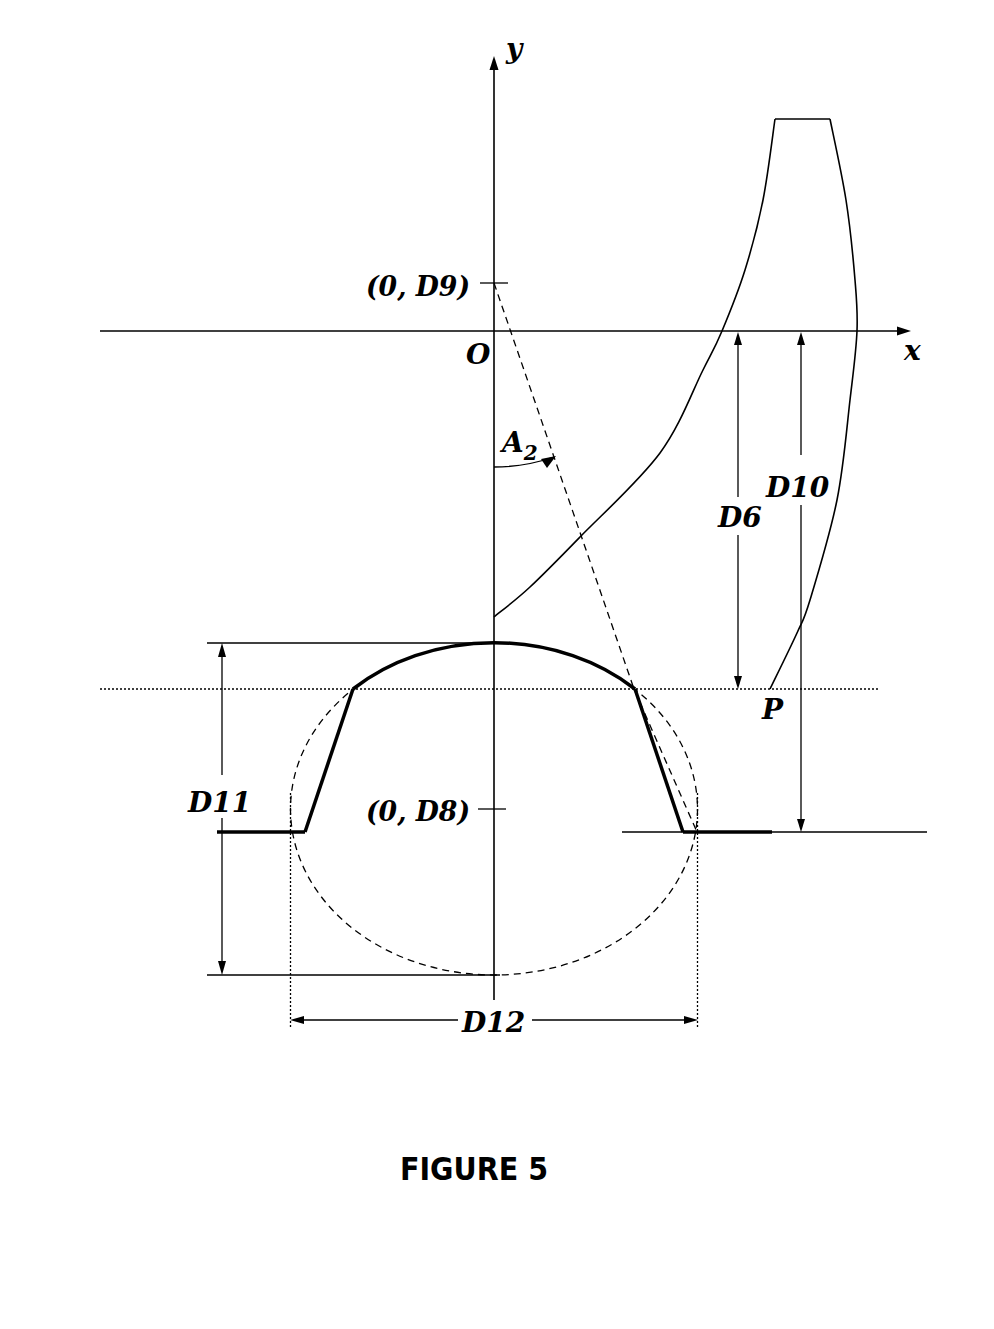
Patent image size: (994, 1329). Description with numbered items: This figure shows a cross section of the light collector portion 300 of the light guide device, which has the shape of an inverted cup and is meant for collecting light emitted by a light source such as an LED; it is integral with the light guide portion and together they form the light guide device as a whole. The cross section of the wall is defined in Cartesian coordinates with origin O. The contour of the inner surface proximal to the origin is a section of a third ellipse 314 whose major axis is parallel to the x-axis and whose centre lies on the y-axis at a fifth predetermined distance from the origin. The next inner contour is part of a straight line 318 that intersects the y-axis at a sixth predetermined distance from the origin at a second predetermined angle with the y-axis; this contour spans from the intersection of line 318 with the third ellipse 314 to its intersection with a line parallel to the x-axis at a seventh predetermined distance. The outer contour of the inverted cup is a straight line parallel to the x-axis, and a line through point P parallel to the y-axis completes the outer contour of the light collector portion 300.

The light collector portion 300 is at (396, 452).
The third ellipse 314 is at (663, 905).
The straight line 318 is at (505, 320).